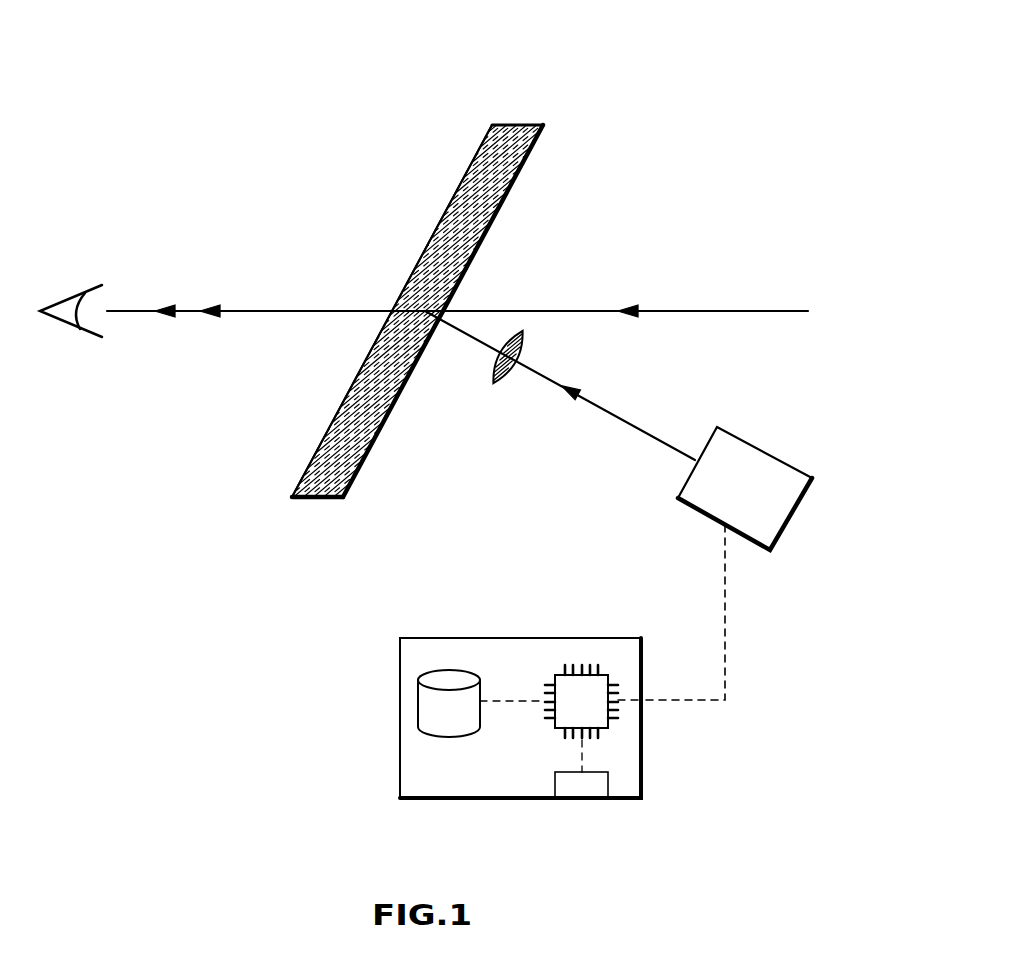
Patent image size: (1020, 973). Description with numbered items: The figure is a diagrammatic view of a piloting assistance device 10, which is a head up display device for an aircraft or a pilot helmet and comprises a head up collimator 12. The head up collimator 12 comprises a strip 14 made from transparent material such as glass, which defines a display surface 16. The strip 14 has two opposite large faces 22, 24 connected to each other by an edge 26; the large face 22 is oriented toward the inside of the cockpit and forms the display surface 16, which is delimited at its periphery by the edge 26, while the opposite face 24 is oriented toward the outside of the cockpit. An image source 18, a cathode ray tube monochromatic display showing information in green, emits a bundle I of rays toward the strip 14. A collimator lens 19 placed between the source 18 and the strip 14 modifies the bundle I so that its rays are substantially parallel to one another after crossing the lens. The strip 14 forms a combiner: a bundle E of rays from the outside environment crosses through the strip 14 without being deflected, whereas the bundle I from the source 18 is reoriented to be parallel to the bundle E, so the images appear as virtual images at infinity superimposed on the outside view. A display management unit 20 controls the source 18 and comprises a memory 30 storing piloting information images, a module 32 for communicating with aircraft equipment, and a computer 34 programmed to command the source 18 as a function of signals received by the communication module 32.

The piloting assistance device 10 is at (258, 155).
The head up collimator 12 is at (671, 148).
The strip 14 is at (526, 97).
The display surface 16 is at (427, 243).
The image source 18 is at (765, 450).
The collimator lens 19 is at (508, 382).
The display management unit 20 is at (513, 638).
The large face 22 is at (354, 376).
The large face 24 is at (505, 205).
The edge 26 is at (507, 125).
The memory 30 is at (428, 702).
The module for communicating 32 is at (587, 790).
The computer 34 is at (605, 683).
The bundle of rays from the outside environment E is at (700, 310).
The bundle of rays from the source I is at (633, 433).